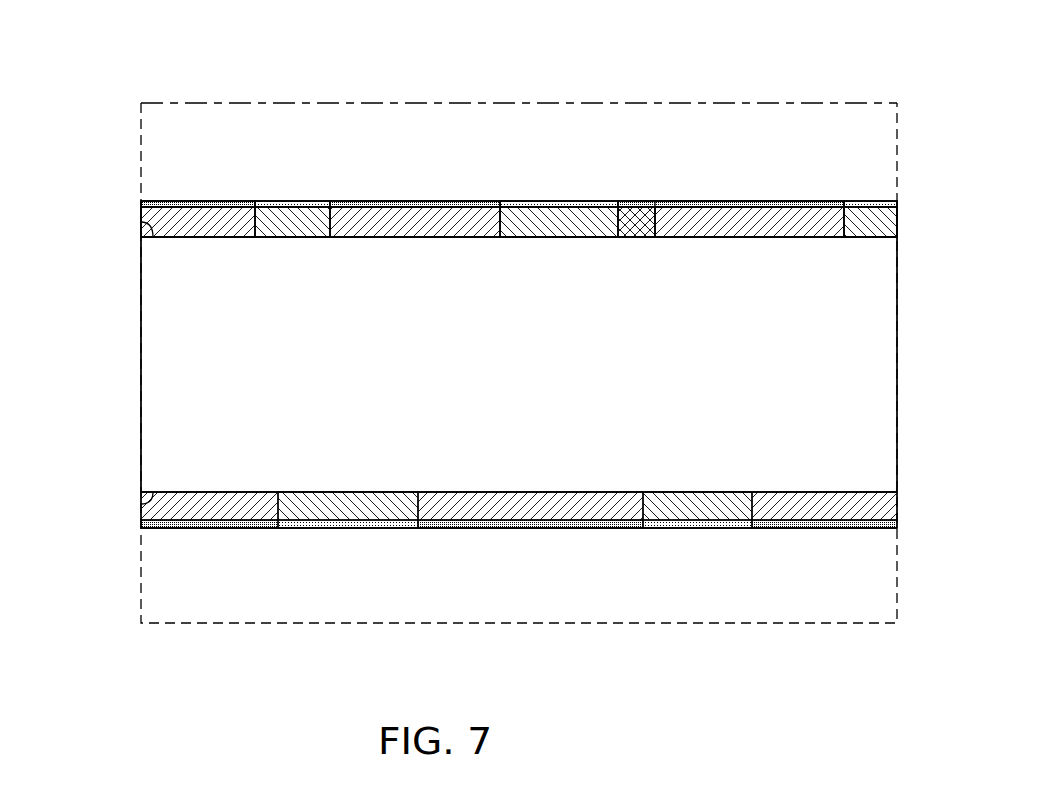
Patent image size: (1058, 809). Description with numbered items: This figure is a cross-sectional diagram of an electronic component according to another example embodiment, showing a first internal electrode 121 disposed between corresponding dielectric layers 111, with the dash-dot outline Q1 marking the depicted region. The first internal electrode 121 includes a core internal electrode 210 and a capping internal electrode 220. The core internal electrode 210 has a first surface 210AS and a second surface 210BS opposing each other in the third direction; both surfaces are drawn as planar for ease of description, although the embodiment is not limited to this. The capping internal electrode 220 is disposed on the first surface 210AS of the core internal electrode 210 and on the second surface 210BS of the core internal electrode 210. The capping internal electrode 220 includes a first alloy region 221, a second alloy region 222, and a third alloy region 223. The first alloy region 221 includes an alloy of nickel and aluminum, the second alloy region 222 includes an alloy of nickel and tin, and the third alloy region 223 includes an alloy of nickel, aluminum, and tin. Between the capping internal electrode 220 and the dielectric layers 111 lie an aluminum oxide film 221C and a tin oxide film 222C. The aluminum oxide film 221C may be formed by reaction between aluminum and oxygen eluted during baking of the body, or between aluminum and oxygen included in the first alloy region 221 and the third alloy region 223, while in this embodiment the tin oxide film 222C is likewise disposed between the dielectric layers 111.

The region Q1 is at (815, 103).
The dielectric layer 111 is at (158, 147).
The first internal electrode 121 is at (124, 347).
The core internal electrode 210 is at (157, 397).
The first surface 210AS is at (141, 222).
The second surface 210BS is at (141, 504).
The capping internal electrode 220 is at (625, 57).
The first alloy region 221 is at (452, 222).
The second alloy region 222 is at (560, 222).
The third alloy region 223 is at (630, 220).
The aluminum oxide film 221C is at (211, 205).
The tin oxide film 222C is at (290, 205).